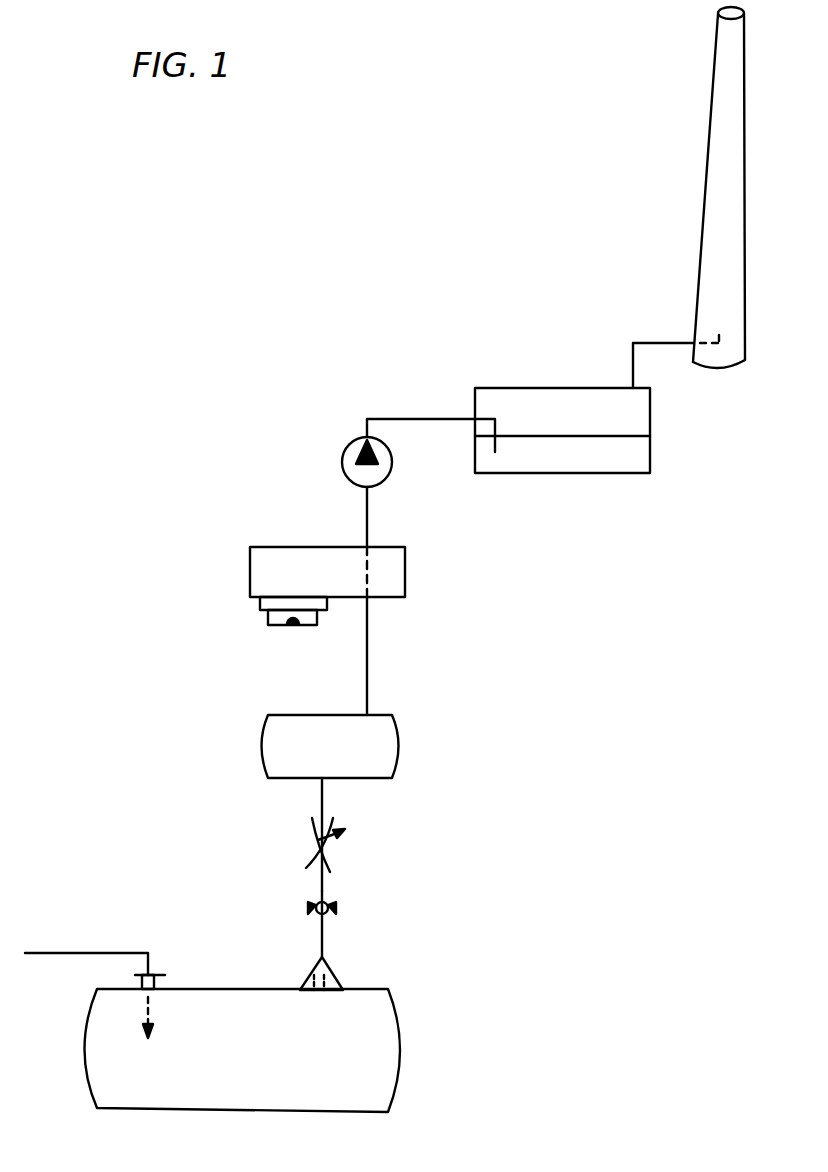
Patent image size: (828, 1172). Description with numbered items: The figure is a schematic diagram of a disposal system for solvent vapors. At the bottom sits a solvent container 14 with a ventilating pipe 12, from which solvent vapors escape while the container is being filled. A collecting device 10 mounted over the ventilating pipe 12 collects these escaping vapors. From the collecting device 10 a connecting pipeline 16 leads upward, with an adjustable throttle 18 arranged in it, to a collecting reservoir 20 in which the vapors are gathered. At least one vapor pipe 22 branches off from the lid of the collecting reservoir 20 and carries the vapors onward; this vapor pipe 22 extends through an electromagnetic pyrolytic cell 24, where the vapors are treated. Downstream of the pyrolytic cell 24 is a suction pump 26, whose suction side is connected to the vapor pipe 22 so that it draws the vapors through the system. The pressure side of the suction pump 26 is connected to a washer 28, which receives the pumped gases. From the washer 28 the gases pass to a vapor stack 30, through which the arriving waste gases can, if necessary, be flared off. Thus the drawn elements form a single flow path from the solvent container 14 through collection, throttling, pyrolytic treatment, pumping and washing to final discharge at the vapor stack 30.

The collecting device 10 is at (330, 968).
The ventilating pipe 12 is at (305, 975).
The solvent container 14 is at (388, 1053).
The connecting pipeline 16 is at (322, 891).
The adjustable throttle 18 is at (318, 846).
The collecting reservoir 20 is at (280, 730).
The vapor pipe 22 is at (368, 633).
The electromagnetic pyrolytic cell 24 is at (270, 560).
The suction pump 26 is at (350, 452).
The washer 28 is at (549, 402).
The vapor stack 30 is at (720, 103).